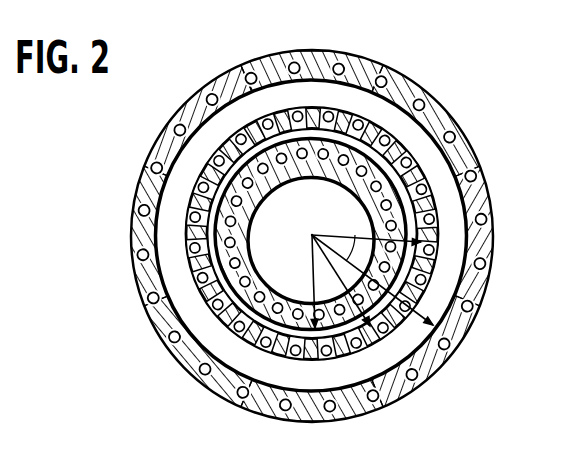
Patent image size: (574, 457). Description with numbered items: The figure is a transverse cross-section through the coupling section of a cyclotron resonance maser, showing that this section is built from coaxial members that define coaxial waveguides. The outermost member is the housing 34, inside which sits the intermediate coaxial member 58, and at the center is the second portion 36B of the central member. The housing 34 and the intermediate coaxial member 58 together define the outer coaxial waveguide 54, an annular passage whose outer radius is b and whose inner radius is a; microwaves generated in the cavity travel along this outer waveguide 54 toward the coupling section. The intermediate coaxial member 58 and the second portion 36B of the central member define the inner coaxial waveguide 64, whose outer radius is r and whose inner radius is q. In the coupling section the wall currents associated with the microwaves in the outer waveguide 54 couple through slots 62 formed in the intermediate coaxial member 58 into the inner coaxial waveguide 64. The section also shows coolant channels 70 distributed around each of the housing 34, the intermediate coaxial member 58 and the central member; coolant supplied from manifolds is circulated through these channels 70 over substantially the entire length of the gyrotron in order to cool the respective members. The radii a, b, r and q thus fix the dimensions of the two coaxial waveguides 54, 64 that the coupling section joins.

The housing 34 is at (188, 103).
The second portion of the central member 36B is at (243, 128).
The outer coaxial waveguide 54 is at (420, 107).
The intermediate coaxial member 58 is at (293, 106).
The slots 62 is at (222, 292).
The inner coaxial waveguide 64 is at (415, 190).
The coolant channels 70 is at (230, 197).
The outer radius of the inner coaxial waveguide r is at (327, 260).
The inner radius of the inner coaxial waveguide q is at (315, 280).
The inner radius of the outer waveguide a is at (363, 230).
The outer radius of the outer waveguide b is at (340, 232).